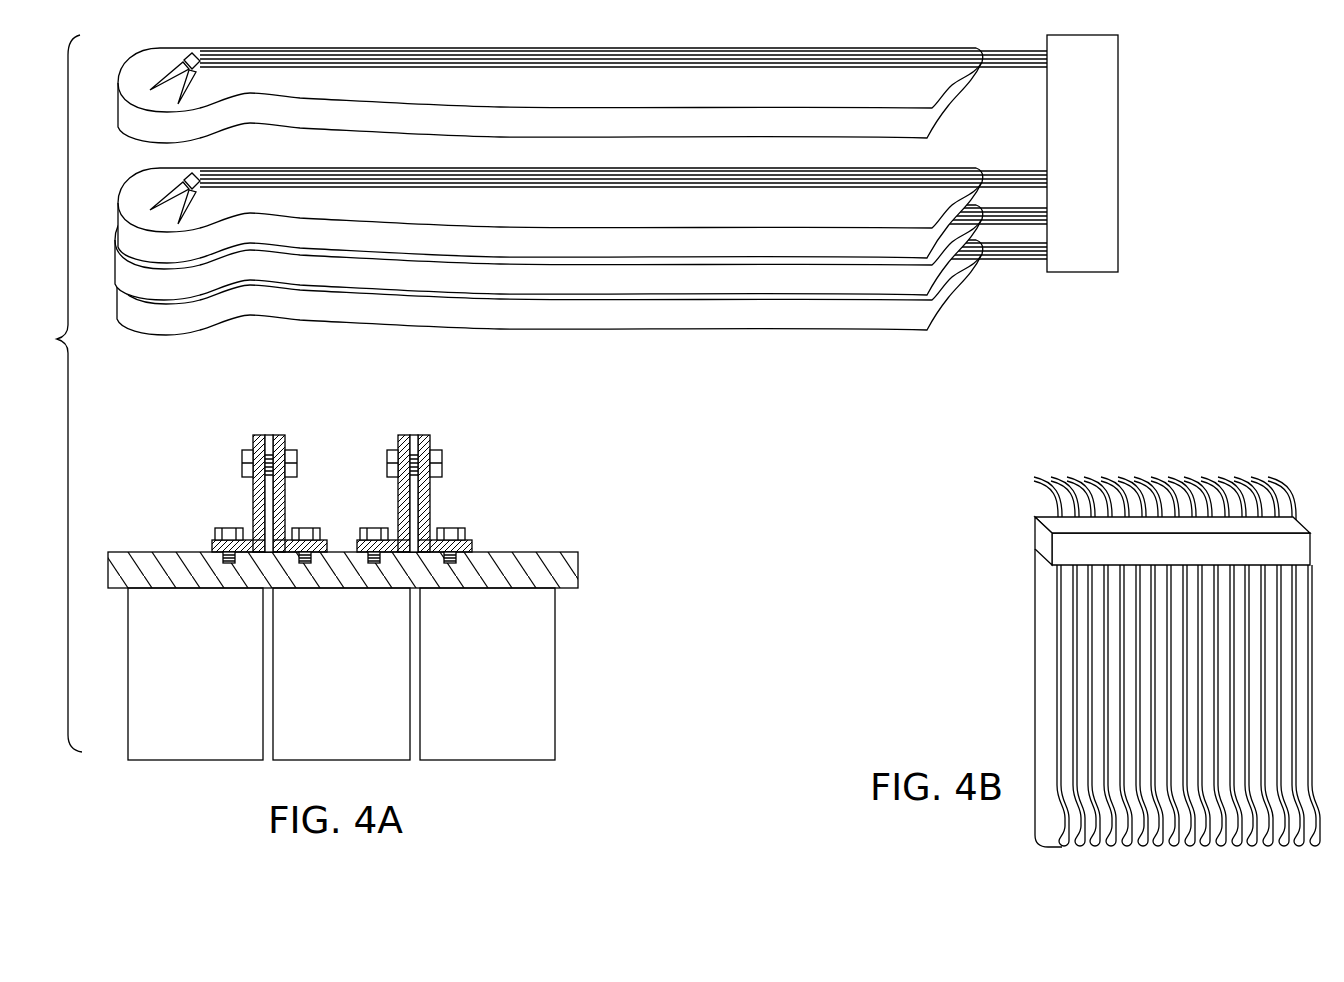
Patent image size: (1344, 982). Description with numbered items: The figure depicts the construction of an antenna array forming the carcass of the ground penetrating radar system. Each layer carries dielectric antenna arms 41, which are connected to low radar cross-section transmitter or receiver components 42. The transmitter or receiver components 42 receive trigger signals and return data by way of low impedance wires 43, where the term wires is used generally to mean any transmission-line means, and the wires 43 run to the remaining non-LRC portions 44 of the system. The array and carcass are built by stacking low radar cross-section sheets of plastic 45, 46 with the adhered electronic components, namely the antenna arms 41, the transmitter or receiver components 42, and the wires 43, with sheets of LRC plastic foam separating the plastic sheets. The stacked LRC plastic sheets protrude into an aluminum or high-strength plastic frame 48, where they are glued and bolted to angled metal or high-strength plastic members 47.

In FIG. 4A, the dielectric antenna arms 41 is at (166, 85).
In FIG. 4A, the transmitter or receiver components 42 is at (208, 47).
In FIG. 4A, the low impedance wires 43 is at (367, 48).
In FIG. 4A, the non-LRC portions 44 is at (1088, 272).
In FIG. 4A, the sheet of plastic 45 is at (135, 192).
In FIG. 4A, the sheet of plastic 46 is at (212, 329).
In FIG. 4A, the angled members 47 is at (451, 492).
In FIG. 4B, the frame 48 is at (1045, 543).